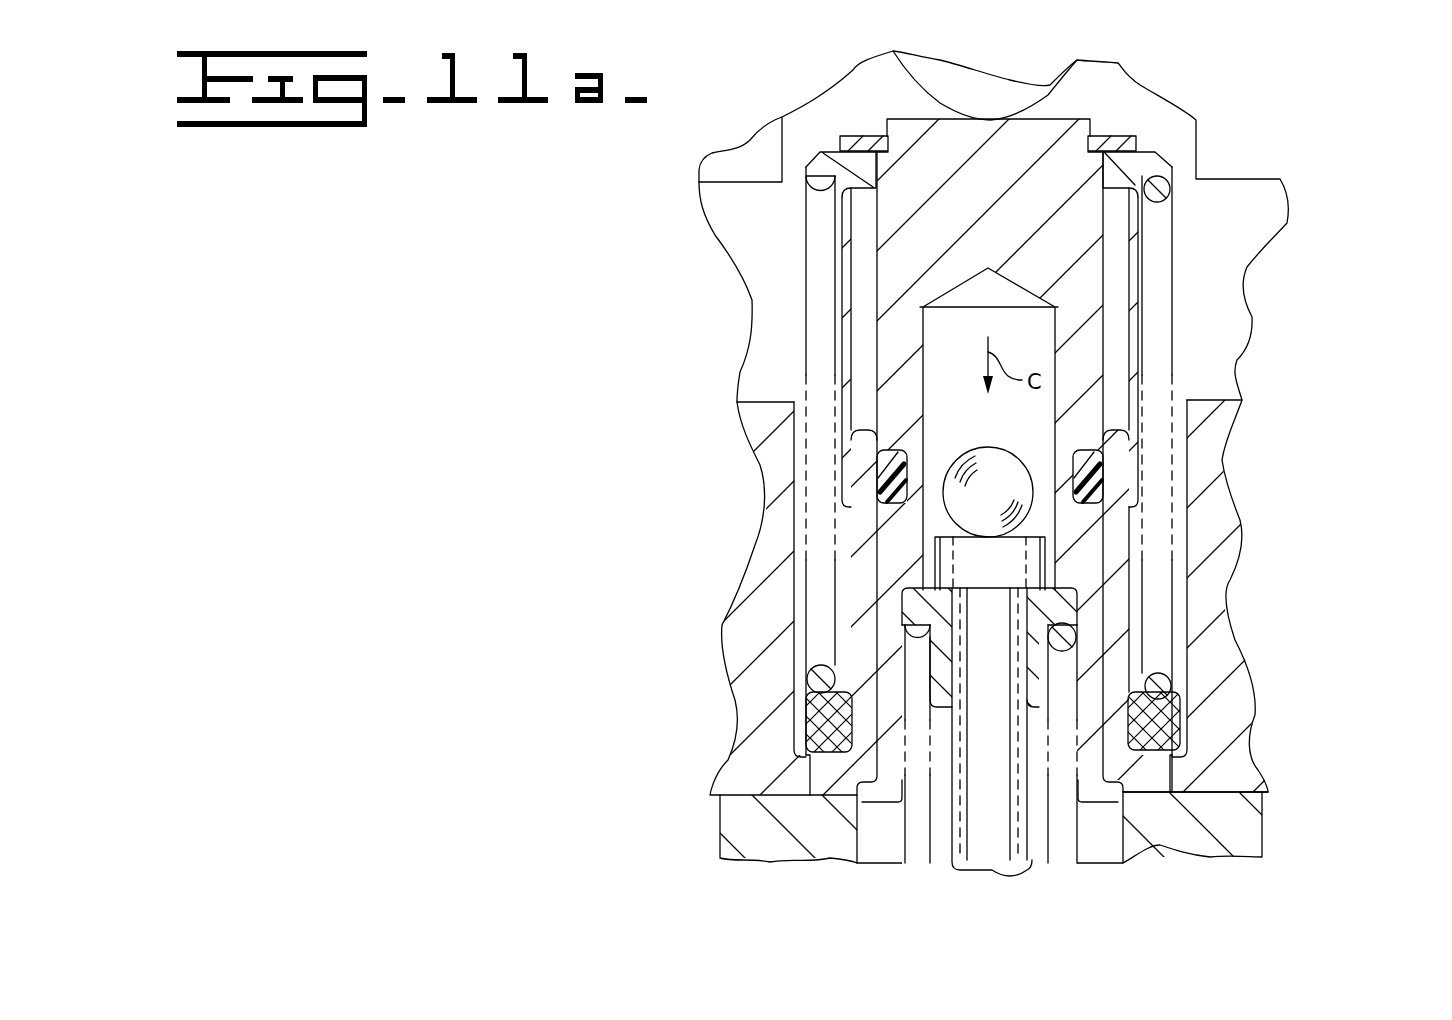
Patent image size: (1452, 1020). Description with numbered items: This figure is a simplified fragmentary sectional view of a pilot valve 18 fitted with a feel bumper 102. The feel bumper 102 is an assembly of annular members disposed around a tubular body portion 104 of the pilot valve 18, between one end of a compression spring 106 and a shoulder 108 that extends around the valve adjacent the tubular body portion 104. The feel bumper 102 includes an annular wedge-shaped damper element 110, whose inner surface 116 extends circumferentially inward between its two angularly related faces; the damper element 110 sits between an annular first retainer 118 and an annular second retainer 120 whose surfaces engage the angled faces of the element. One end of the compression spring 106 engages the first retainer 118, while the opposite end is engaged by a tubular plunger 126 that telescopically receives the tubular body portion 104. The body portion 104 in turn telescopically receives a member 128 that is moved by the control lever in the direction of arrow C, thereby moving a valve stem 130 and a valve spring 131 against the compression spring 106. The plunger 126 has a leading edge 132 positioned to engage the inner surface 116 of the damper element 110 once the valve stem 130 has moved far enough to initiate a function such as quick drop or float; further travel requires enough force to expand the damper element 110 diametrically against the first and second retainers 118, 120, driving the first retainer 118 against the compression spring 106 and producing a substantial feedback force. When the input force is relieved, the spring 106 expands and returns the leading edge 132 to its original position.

The pilot valve 18 is at (708, 842).
The feel bumper 102 is at (1280, 675).
The tubular body portion 104 is at (1107, 568).
The compression spring 106 is at (1157, 676).
The shoulder 108 is at (1172, 750).
The damper element 110 is at (1180, 730).
The inner surface 116 is at (1132, 690).
The first retainer 118 is at (803, 704).
The second retainer 120 is at (806, 735).
The tubular plunger 126 is at (1160, 152).
The member 128 is at (1092, 120).
The valve stem 130 is at (1026, 843).
The valve spring 131 is at (907, 836).
The leading edge 132 is at (1107, 548).